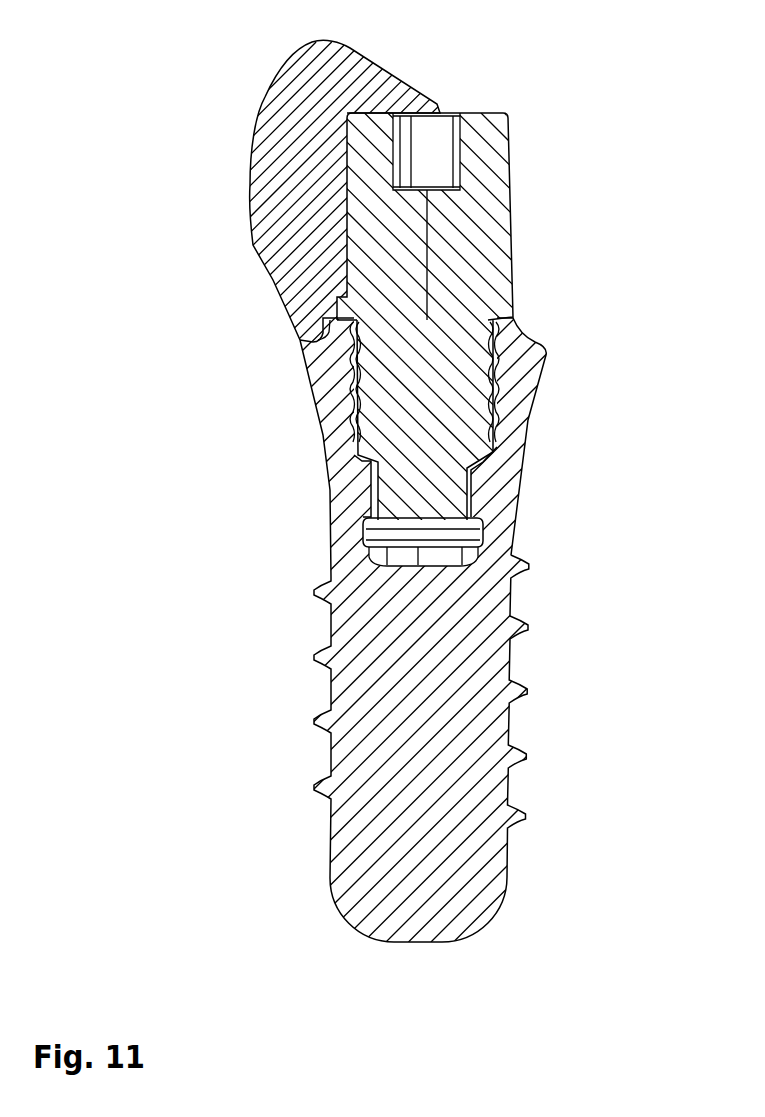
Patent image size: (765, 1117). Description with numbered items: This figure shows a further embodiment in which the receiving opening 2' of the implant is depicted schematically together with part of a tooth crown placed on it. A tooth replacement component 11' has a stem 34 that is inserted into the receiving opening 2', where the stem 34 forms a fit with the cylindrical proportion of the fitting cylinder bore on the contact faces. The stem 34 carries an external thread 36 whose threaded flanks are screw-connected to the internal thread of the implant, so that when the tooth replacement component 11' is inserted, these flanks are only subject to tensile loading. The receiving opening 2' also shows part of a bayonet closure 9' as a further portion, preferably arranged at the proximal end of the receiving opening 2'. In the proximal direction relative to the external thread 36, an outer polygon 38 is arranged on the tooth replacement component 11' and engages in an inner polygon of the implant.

The receiving opening 2' is at (382, 568).
The tooth replacement component 11' is at (382, 270).
The bayonet closure 9' is at (511, 513).
The stem 34 is at (360, 381).
The external thread 36 is at (352, 413).
The outer polygon 38 is at (500, 438).